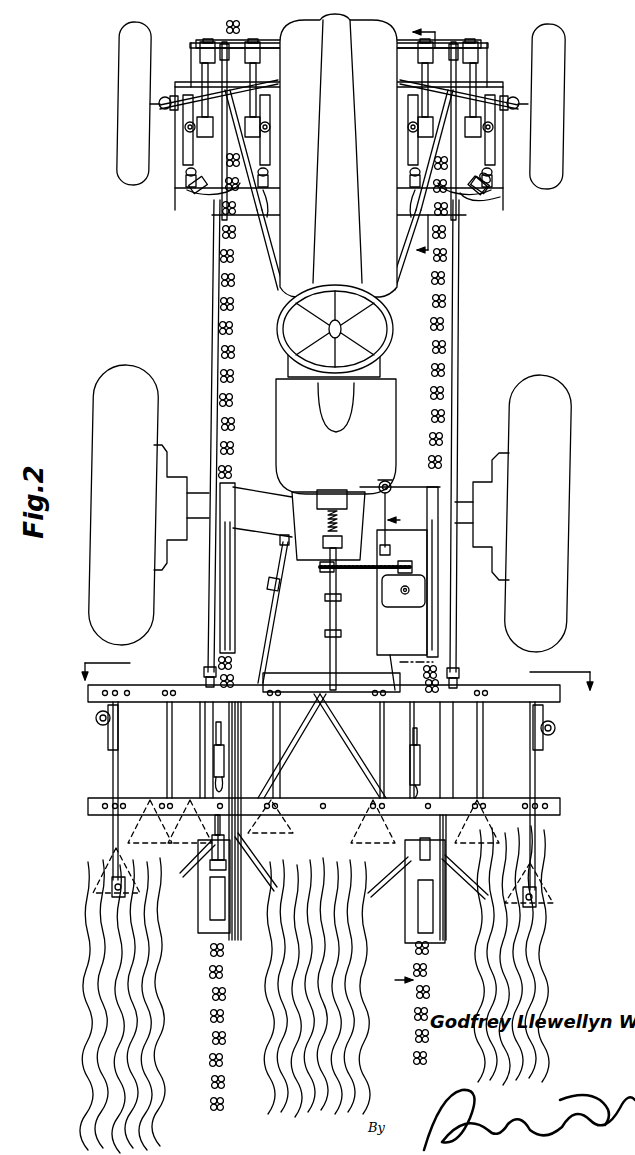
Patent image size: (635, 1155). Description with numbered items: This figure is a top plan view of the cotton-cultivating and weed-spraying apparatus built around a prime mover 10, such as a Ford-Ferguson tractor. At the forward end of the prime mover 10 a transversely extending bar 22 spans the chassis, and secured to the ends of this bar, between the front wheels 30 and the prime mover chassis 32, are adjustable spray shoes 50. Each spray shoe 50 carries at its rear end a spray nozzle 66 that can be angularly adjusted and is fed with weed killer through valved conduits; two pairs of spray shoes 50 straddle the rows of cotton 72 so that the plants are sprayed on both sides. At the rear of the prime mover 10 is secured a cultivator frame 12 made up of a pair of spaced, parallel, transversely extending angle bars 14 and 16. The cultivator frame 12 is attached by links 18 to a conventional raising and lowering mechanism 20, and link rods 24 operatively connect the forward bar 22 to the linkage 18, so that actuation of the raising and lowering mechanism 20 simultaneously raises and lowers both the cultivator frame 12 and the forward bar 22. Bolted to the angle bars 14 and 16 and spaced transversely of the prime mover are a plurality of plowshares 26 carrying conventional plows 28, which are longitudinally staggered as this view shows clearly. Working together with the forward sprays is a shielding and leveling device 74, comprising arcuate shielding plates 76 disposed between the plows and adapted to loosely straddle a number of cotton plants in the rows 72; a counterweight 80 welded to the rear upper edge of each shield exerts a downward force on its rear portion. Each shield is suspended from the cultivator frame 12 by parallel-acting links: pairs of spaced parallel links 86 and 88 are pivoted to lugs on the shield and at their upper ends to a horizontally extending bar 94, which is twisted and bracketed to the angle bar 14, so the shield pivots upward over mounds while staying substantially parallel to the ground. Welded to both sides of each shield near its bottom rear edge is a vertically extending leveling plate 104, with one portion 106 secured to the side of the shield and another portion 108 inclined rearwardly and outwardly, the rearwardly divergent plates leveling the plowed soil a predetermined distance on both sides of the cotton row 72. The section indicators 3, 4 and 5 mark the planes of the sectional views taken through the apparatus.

The prime mover 10 is at (200, 312).
The front wheels 30 is at (132, 107).
The transversely extending bar 22 is at (408, 58).
The prime mover chassis 32 is at (213, 36).
The spray shoe 50 is at (185, 82).
The spray nozzle 66 is at (480, 196).
The section line 5 is at (414, 150).
The link rods 24 is at (210, 428).
The rows of cotton 72 is at (222, 253).
The raising and lowering mechanism 20 is at (390, 503).
The section line 4 is at (395, 748).
The cultivator frame 12 is at (302, 745).
The angle bar 16 is at (87, 693).
The angle bar 14 is at (87, 803).
The links 18 is at (288, 743).
The plowshares 26 is at (478, 762).
The plows 28 is at (158, 782).
The shielding and leveling device 74 is at (314, 927).
The arcuate shielding plates 76 is at (235, 927).
The counterweight 80 is at (430, 923).
The link 88 is at (215, 743).
The link 86 is at (232, 765).
The horizontally extending bar 94 is at (218, 827).
The inclined portion of leveling plate 108 is at (186, 888).
The leveling plate 104 is at (150, 878).
The secured portion of leveling plate 106 is at (170, 873).
The section line 3 is at (331, 682).